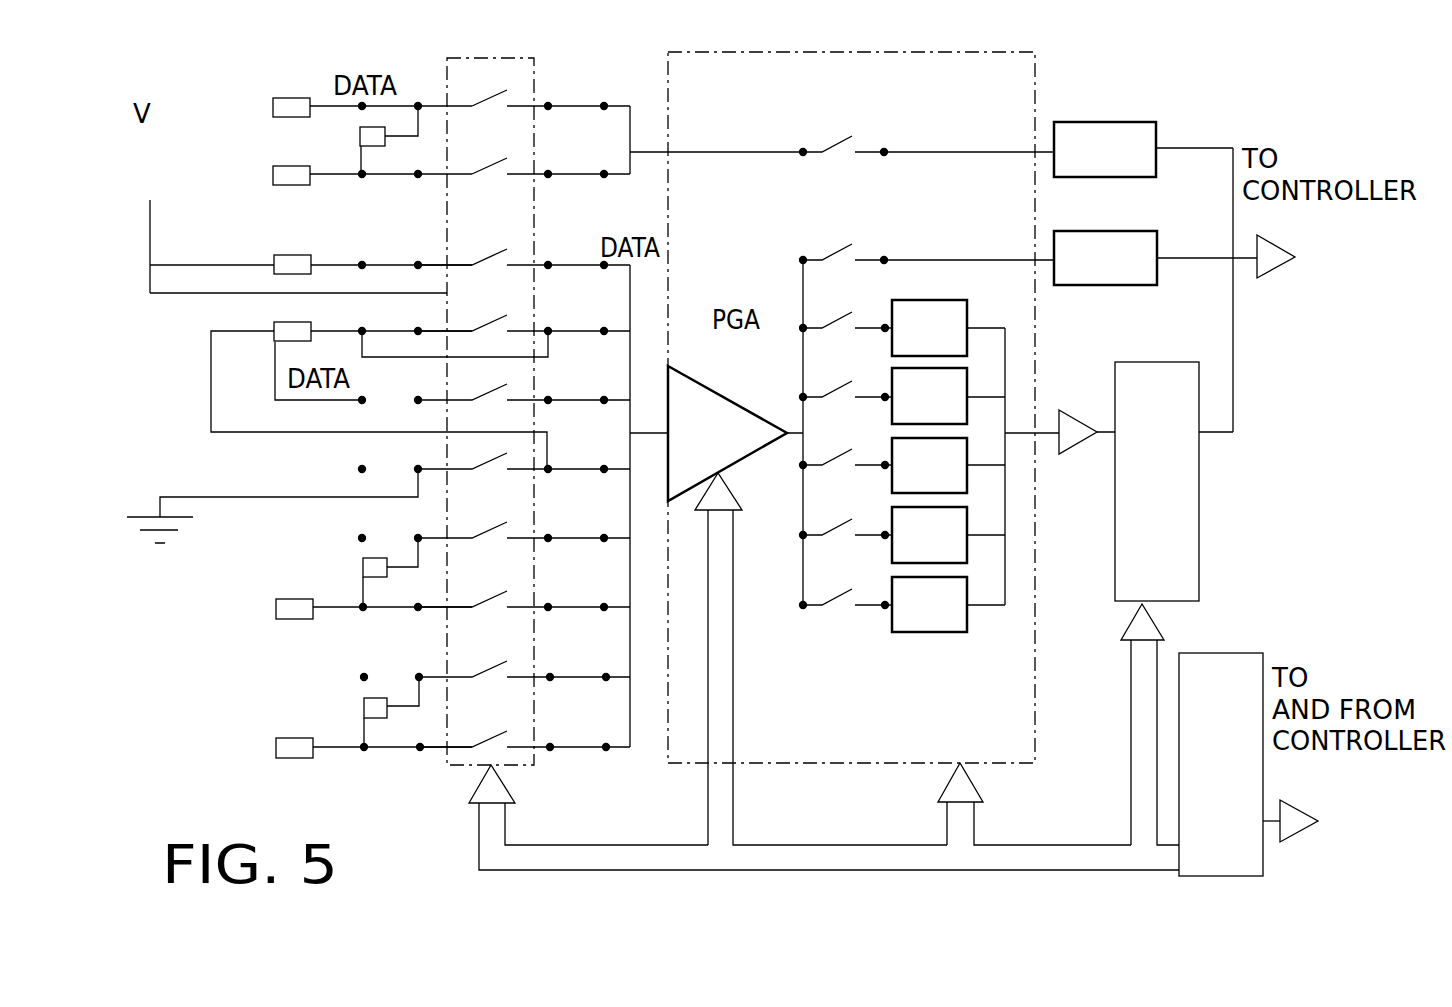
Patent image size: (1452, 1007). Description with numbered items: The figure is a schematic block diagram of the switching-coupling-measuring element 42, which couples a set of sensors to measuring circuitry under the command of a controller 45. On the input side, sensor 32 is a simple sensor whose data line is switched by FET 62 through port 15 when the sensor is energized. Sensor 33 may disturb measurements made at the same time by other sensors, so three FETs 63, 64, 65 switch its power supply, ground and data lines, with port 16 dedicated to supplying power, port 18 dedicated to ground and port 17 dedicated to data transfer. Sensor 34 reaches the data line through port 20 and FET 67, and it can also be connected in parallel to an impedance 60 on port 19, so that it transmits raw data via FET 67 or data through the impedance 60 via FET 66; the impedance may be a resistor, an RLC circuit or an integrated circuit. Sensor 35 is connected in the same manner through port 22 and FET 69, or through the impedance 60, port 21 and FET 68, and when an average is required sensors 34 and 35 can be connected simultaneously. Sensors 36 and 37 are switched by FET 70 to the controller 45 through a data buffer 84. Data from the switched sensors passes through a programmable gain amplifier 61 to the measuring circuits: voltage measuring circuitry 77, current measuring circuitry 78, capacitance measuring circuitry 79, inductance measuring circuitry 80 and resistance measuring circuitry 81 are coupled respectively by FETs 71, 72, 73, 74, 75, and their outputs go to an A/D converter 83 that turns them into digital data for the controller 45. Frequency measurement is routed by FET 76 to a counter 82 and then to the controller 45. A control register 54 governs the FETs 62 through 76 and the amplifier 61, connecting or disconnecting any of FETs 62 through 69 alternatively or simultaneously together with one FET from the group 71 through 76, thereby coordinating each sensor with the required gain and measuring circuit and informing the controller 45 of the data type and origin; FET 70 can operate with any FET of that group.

The port 15 is at (418, 262).
The port 16 is at (418, 333).
The port 17 is at (418, 399).
The port 18 is at (418, 471).
The port 19 is at (418, 540).
The port 20 is at (418, 606).
The port 21 is at (419, 677).
The port 22 is at (421, 751).
The sensor 32 is at (297, 263).
The sensor 33 is at (293, 328).
The sensor 34 is at (263, 609).
The sensor 35 is at (263, 749).
The sensor 36 is at (277, 105).
The sensor 37 is at (273, 184).
The switching-coupling-measuring element 42 is at (1450, 473).
The controller 45 is at (1280, 525).
The control register 54 is at (1205, 682).
The impedance 60 is at (362, 566).
The programmable gain amplifier 61 is at (738, 415).
The FET 62 is at (556, 240).
The FET 63 is at (548, 328).
The FET 64 is at (548, 397).
The FET 65 is at (549, 468).
The FET 66 is at (548, 535).
The FET 67 is at (548, 604).
The FET 68 is at (550, 674).
The FET 69 is at (550, 744).
The FET 70 is at (826, 148).
The FET 71 is at (847, 318).
The FET 72 is at (847, 387).
The FET 73 is at (847, 456).
The FET 74 is at (847, 526).
The FET 75 is at (847, 596).
The FET 76 is at (847, 253).
The voltage measuring circuitry 77 is at (998, 305).
The current measuring circuitry 78 is at (996, 371).
The capacitance measuring circuitry 79 is at (996, 450).
The inductance measuring circuitry 80 is at (996, 511).
The resistance measuring circuitry 81 is at (996, 586).
The counter 82 is at (1098, 266).
The A/D converter 83 is at (1167, 376).
The data buffer 84 is at (1133, 138).